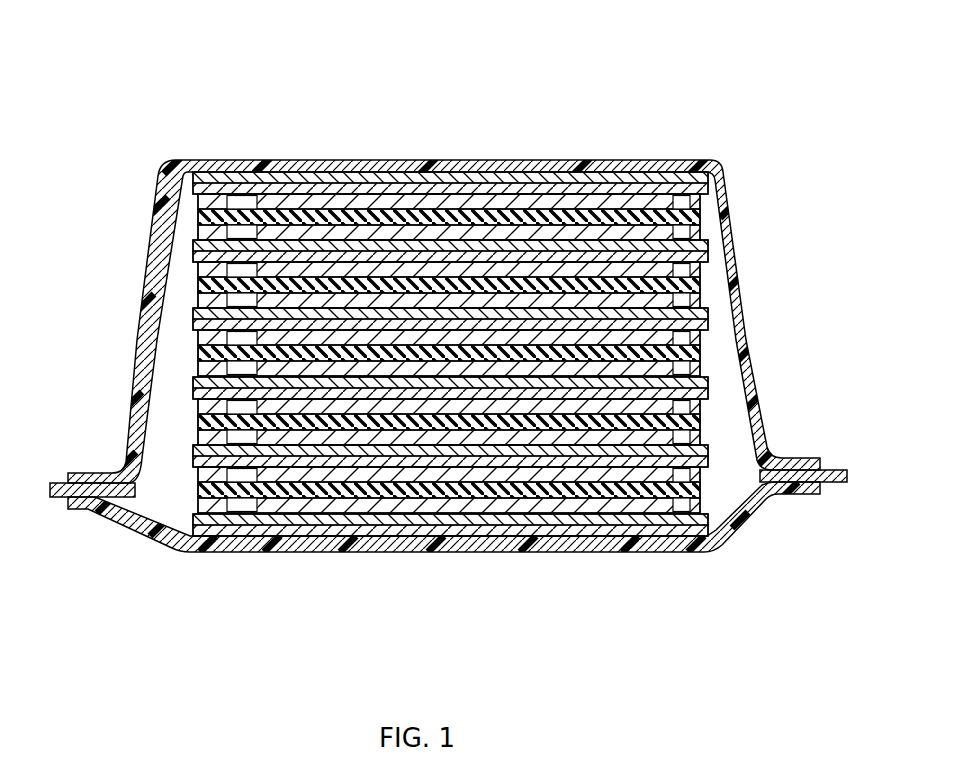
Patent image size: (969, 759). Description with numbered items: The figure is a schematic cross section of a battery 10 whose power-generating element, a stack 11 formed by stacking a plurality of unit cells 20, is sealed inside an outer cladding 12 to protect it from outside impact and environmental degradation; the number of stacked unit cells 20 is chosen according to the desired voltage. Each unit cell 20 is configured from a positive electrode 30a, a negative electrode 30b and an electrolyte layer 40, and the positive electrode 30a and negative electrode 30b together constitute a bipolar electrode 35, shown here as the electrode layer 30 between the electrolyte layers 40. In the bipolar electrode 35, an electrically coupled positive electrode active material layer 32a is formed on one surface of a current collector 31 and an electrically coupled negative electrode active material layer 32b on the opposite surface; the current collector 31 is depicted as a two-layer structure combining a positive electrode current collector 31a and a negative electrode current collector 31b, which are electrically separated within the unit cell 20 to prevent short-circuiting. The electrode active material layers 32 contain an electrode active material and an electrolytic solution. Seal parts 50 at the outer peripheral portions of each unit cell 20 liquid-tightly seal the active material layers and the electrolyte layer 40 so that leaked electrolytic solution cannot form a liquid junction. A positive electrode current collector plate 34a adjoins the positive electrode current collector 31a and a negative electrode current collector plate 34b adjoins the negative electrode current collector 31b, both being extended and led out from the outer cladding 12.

The battery 10 is at (82, 21).
The stack 11 is at (717, 355).
The outer cladding 12 is at (148, 305).
The unit cell 20 is at (252, 49).
The electrode laminate 30 is at (352, 84).
The positive electrode 30a is at (333, 124).
The negative electrode 30b is at (460, 124).
The current collector 31 is at (408, 602).
The positive electrode current collector 31a is at (360, 197).
The negative electrode current collector 31b is at (555, 247).
The electrode active material layers 32 is at (548, 602).
The positive electrode active material layer 32a is at (420, 215).
The negative electrode active material layer 32b is at (497, 232).
The positive electrode current collector plate 34a is at (62, 483).
The negative electrode current collector plate 34b is at (835, 470).
The bipolar electrode 35 is at (290, 642).
The electrolyte layer 40 is at (625, 207).
The seal parts 50 is at (218, 205).